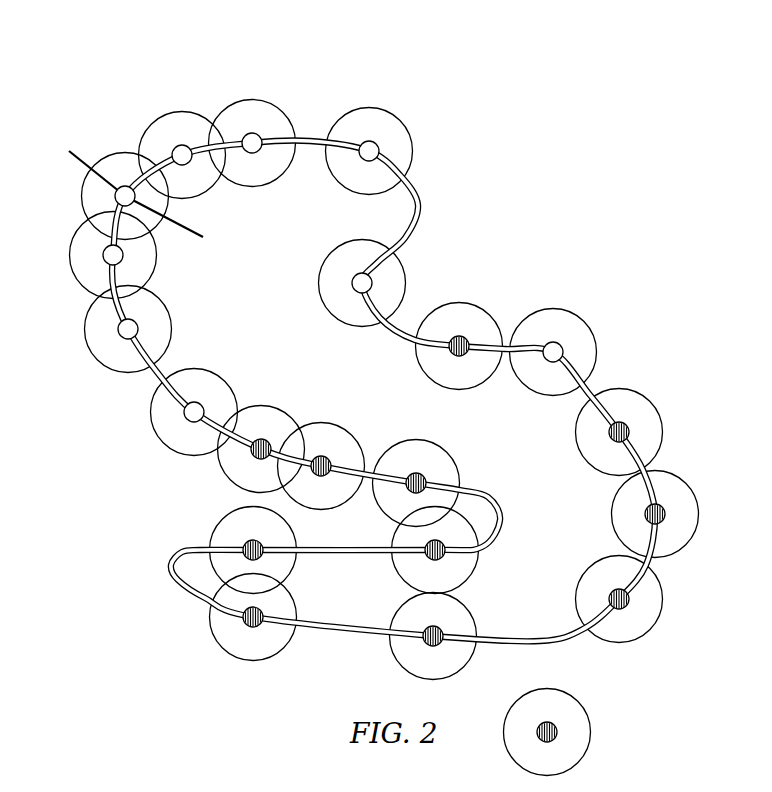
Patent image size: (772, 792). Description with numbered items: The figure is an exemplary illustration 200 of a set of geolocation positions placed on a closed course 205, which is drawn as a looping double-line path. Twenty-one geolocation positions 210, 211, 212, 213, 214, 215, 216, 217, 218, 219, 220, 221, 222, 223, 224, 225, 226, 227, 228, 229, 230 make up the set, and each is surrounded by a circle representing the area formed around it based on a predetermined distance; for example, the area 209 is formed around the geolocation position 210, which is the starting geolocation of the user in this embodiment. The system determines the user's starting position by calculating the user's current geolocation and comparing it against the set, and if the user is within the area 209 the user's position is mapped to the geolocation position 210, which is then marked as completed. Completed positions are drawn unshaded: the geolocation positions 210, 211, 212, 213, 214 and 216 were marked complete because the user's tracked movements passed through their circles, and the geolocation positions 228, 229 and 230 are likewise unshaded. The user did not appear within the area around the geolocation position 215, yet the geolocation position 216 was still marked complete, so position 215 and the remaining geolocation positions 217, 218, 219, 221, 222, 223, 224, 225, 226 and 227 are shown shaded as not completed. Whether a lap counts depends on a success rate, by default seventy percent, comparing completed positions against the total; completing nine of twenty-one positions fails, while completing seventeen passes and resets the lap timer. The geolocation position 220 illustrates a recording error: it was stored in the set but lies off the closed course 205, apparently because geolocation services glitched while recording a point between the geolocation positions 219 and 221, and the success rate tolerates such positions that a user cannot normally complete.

The exemplary illustration 200 is at (463, 54).
The closed course 205 is at (423, 200).
The area 209 is at (108, 153).
The geolocation position 210 is at (114, 197).
The geolocation position 211 is at (190, 164).
The geolocation position 212 is at (258, 152).
The geolocation position 213 is at (377, 144).
The geolocation position 214 is at (373, 282).
The geolocation position 215 is at (452, 355).
The geolocation position 216 is at (562, 350).
The geolocation position 217 is at (630, 432).
The geolocation position 218 is at (666, 514).
The geolocation position 219 is at (627, 607).
The geolocation position 220 is at (558, 732).
The geolocation position 221 is at (440, 645).
The geolocation position 222 is at (259, 626).
The geolocation position 223 is at (249, 541).
The geolocation position 224 is at (443, 558).
The geolocation position 225 is at (424, 476).
The geolocation position 226 is at (328, 458).
The geolocation position 227 is at (268, 441).
The geolocation position 228 is at (202, 405).
The geolocation position 229 is at (139, 329).
The geolocation position 230 is at (124, 255).